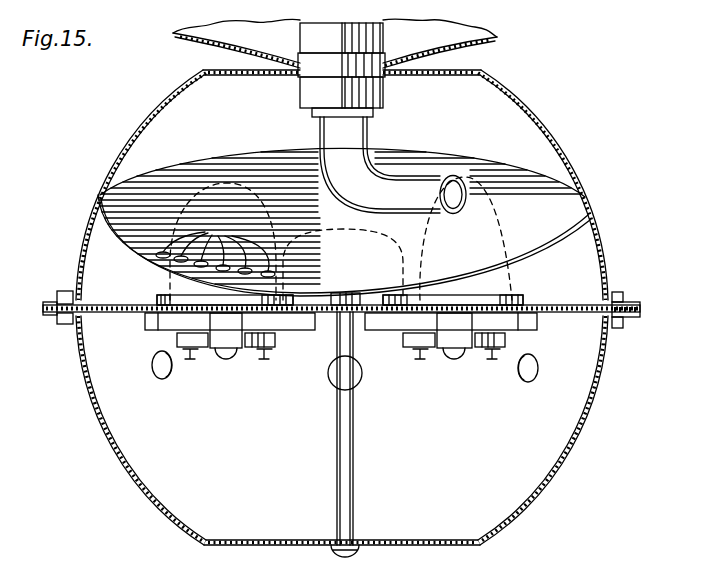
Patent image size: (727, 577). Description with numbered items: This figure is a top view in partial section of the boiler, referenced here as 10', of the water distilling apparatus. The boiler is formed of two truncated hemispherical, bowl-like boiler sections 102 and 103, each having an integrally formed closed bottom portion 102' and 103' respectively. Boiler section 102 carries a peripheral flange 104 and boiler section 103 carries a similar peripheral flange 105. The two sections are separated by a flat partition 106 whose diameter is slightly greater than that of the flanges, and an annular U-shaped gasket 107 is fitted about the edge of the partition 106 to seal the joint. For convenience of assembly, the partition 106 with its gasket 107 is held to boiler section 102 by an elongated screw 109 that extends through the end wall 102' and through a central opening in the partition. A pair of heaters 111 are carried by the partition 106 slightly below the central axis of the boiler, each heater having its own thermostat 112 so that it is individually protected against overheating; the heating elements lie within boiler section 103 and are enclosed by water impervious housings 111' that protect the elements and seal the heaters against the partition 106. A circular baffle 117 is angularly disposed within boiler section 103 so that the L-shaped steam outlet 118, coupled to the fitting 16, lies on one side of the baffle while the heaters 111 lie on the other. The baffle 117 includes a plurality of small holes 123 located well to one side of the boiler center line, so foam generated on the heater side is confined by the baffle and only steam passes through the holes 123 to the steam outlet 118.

The humidifier apparatus 10' is at (359, 20).
The fitting 16 is at (300, 94).
The boiler section 102 is at (360, 430).
The closed bottom portion 102' is at (342, 516).
The boiler section 103 is at (342, 185).
The closed bottom portion 103' is at (362, 52).
The peripheral flange 104 is at (607, 337).
The peripheral flange 105 is at (612, 294).
The partition 106 is at (420, 300).
The gasket 107 is at (641, 304).
The elongated screw 109 is at (351, 432).
The heaters 111 is at (341, 286).
The water impervious housing 111' is at (341, 238).
The thermostat 112 is at (302, 330).
The baffle 117 is at (206, 138).
The steam outlet 118 is at (413, 176).
The small holes 123 is at (215, 249).